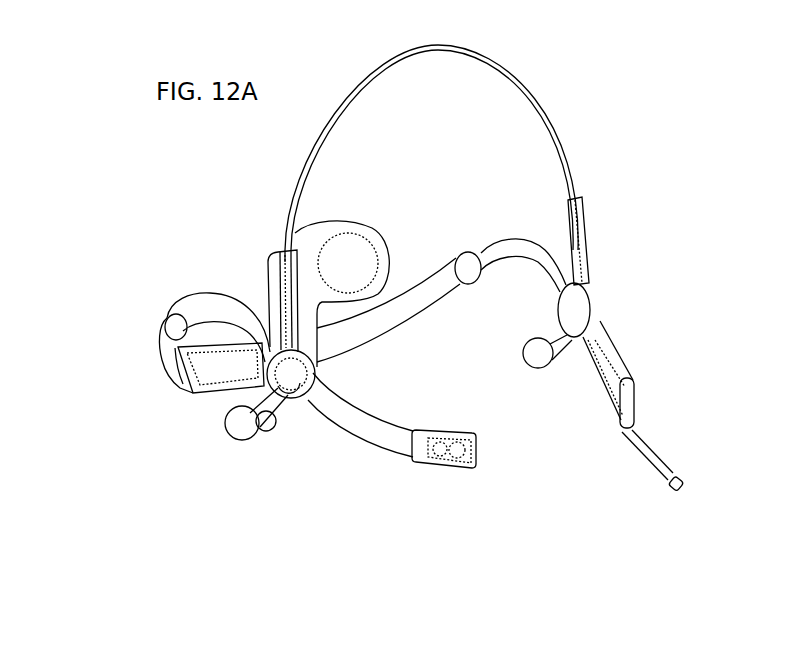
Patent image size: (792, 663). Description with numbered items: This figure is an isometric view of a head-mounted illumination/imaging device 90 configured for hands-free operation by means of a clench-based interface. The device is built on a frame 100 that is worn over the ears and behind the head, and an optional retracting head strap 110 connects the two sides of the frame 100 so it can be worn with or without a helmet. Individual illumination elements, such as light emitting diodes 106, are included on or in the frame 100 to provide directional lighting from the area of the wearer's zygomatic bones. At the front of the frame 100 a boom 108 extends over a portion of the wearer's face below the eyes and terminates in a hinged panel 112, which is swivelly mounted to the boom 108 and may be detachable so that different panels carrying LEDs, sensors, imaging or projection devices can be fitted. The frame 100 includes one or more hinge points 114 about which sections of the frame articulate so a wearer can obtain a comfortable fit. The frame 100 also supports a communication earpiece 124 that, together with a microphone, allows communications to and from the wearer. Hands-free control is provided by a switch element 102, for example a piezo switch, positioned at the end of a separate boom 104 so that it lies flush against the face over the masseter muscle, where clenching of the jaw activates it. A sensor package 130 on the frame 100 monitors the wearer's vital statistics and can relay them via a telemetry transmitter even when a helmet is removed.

The illumination/imaging device 90 is at (229, 166).
The frame 100 is at (183, 388).
The switch element 102 is at (681, 488).
The boom 104 is at (660, 463).
The light emitting diodes 106 is at (440, 455).
The boom 108 is at (370, 430).
The retracting head strap 110 is at (540, 98).
The hinged panel 112 is at (480, 451).
The hinge point 114 is at (465, 252).
The communication earpiece 124 is at (230, 426).
The sensor package 130 is at (350, 248).